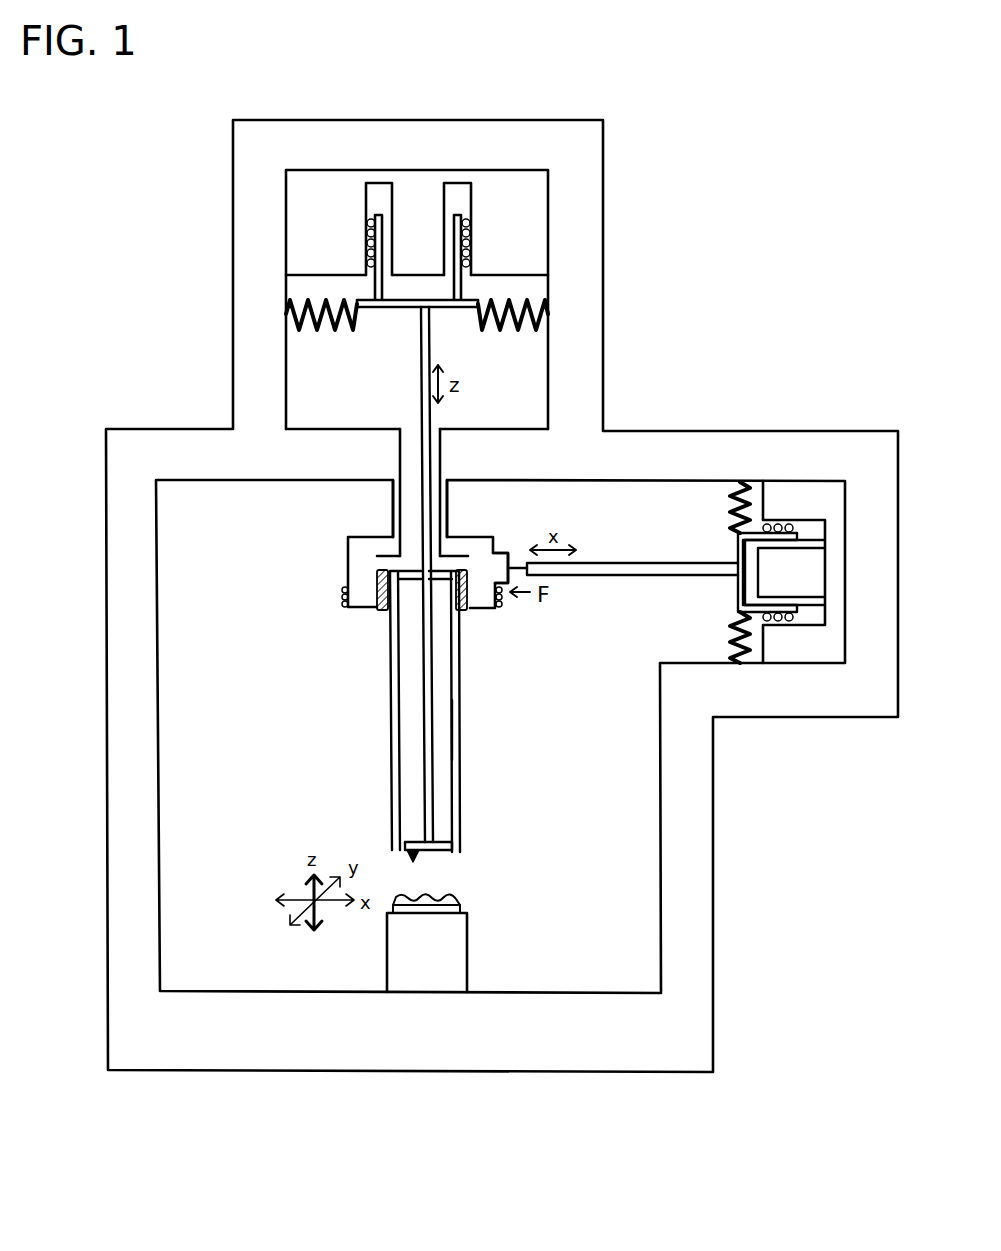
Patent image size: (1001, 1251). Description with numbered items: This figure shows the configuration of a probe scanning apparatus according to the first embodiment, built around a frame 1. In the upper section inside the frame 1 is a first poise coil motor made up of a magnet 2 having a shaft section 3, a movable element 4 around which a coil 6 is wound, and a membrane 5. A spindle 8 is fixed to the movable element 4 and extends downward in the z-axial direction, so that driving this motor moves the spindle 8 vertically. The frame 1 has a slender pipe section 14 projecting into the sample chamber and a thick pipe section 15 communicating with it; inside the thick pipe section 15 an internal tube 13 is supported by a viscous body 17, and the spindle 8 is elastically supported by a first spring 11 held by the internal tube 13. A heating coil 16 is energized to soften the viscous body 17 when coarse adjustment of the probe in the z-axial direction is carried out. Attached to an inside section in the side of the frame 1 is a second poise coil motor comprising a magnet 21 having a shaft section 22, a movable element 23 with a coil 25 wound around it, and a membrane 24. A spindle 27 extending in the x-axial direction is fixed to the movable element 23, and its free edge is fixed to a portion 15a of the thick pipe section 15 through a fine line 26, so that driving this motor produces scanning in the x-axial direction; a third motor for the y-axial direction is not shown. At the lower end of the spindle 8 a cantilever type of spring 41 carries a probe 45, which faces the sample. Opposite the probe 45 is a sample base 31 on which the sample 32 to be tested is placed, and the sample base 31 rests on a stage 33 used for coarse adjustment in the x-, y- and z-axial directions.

The frame 1 is at (585, 162).
The magnet 2 is at (530, 240).
The shaft section 3 is at (418, 237).
The movable element 4 is at (366, 218).
The membrane 5 is at (527, 330).
The coil 6 is at (366, 240).
The spindle 8 is at (420, 405).
The first spring 11 is at (436, 590).
The internal tube 13 is at (462, 724).
The slender pipe section 14 is at (393, 505).
The thick pipe section 15 is at (348, 548).
The portion of the thick pipe section 15a is at (500, 552).
The heating coil 16 is at (342, 597).
The viscous body 17 is at (382, 613).
The magnet 21 is at (795, 495).
The shaft section 22 is at (782, 572).
The movable element 23 is at (738, 555).
The membrane 24 is at (728, 490).
The coil 25 is at (780, 625).
The fine line 26 is at (520, 566).
The spindle 27 is at (612, 563).
The sample base 31 is at (465, 915).
The sample 32 is at (460, 900).
The stage 33 is at (405, 960).
The cantilever type of spring 41 is at (462, 845).
The probe 45 is at (418, 858).